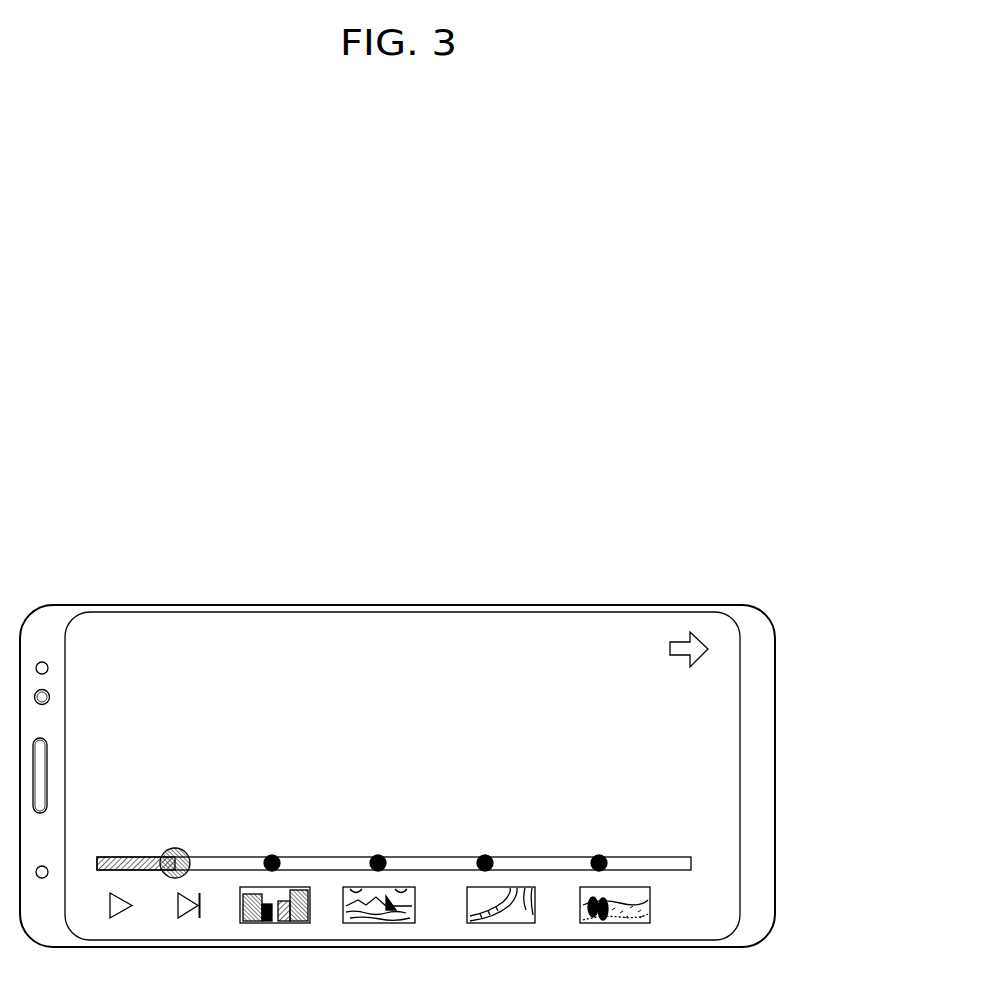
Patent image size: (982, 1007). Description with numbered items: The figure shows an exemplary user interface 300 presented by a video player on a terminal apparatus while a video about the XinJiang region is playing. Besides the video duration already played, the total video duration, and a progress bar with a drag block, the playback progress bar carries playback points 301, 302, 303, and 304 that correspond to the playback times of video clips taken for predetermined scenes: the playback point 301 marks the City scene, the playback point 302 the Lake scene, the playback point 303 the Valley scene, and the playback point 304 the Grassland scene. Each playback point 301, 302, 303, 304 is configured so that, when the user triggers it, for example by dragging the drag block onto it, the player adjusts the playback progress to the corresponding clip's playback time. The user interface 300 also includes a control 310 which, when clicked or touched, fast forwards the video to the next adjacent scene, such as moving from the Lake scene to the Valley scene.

The user interface 300 is at (627, 612).
The control 310 is at (697, 633).
The playback point 301 is at (274, 856).
The playback point 302 is at (379, 856).
The playback point 303 is at (486, 856).
The playback point 304 is at (600, 856).